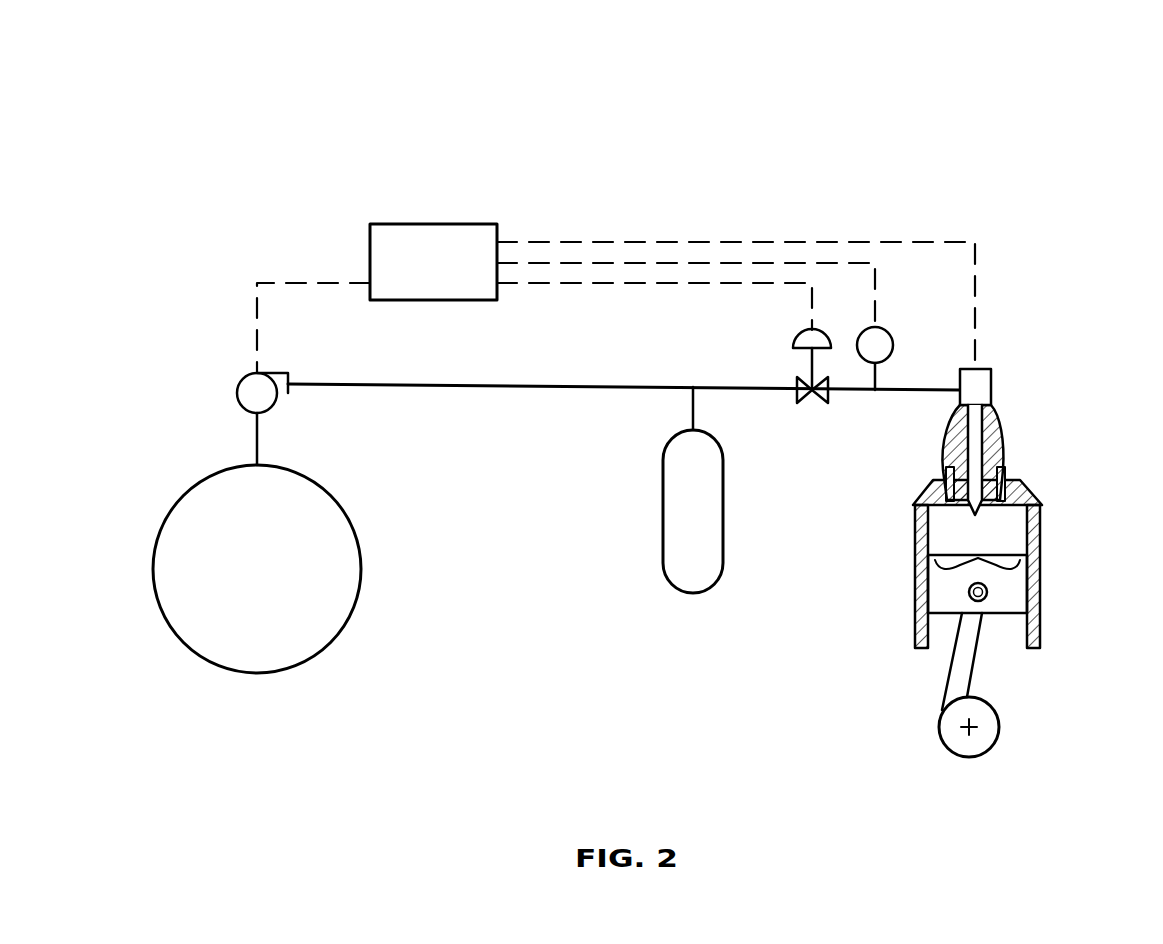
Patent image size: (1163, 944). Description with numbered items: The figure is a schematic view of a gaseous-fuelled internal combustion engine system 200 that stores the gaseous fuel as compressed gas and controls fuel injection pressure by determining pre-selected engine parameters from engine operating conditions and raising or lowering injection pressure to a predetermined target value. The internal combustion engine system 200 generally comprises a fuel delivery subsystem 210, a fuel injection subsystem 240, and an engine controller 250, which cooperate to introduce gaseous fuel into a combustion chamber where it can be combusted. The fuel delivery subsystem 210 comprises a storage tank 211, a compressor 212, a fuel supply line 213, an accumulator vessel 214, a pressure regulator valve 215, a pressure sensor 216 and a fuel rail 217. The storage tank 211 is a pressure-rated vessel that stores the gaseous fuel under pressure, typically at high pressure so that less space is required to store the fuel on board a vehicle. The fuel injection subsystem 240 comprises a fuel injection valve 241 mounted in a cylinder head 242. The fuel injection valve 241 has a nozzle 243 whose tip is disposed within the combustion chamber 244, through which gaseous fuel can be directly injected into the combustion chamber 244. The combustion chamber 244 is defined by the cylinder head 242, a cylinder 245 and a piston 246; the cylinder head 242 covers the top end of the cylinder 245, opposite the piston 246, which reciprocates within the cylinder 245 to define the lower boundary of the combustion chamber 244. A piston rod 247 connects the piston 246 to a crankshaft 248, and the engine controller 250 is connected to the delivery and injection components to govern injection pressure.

The internal combustion engine system 200 is at (378, 108).
The fuel delivery subsystem 210 is at (215, 320).
The storage tank 211 is at (208, 508).
The compressor 212 is at (242, 395).
The fuel supply line 213 is at (582, 387).
The accumulator vessel 214 is at (677, 537).
The pressure regulator valve 215 is at (823, 397).
The pressure sensor 216 is at (884, 337).
The fuel rail 217 is at (906, 390).
The fuel injection subsystem 240 is at (1048, 358).
The fuel injection valve 241 is at (990, 413).
The cylinder head 242 is at (998, 440).
The nozzle 243 is at (958, 510).
The combustion chamber 244 is at (1008, 553).
The cylinder 245 is at (1032, 523).
The piston 246 is at (1013, 590).
The connecting rod 247 is at (965, 668).
The crankshaft 248 is at (988, 727).
The engine controller 250 is at (398, 240).